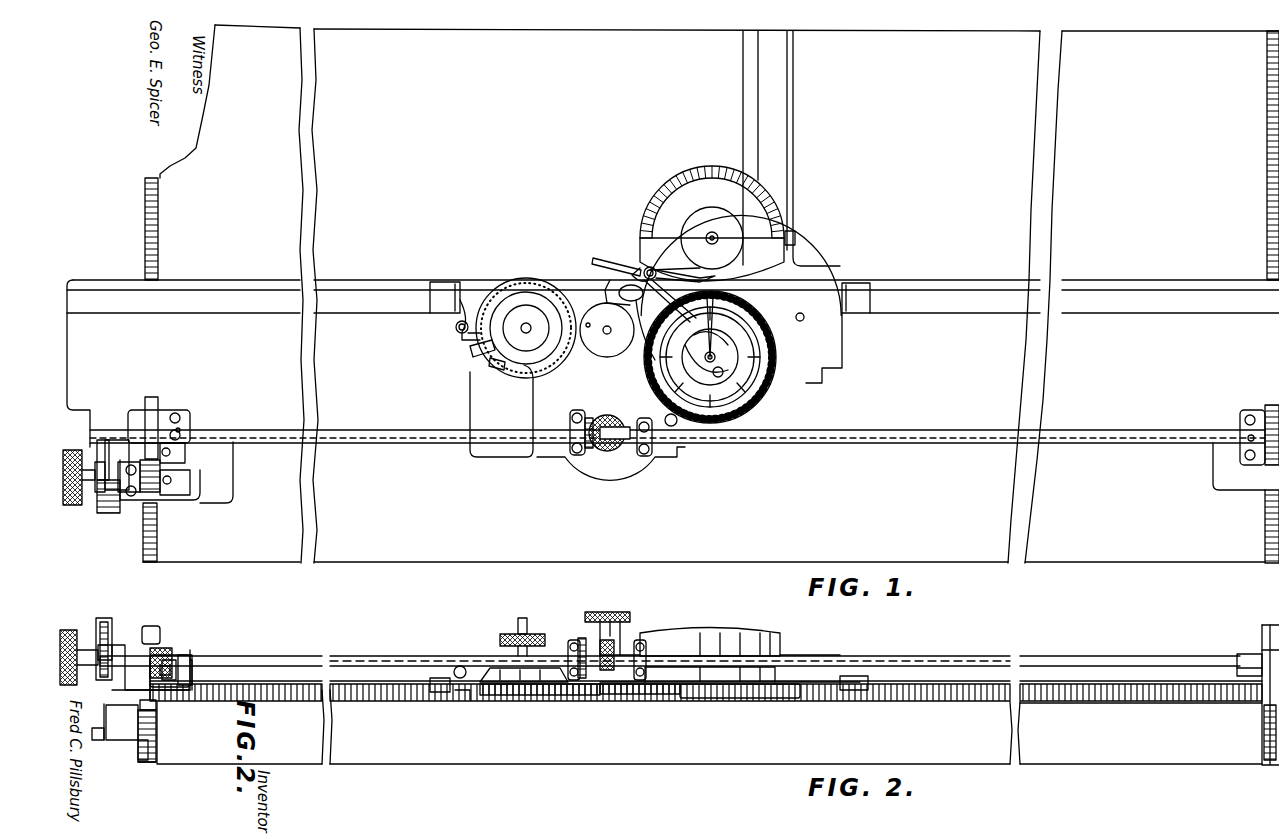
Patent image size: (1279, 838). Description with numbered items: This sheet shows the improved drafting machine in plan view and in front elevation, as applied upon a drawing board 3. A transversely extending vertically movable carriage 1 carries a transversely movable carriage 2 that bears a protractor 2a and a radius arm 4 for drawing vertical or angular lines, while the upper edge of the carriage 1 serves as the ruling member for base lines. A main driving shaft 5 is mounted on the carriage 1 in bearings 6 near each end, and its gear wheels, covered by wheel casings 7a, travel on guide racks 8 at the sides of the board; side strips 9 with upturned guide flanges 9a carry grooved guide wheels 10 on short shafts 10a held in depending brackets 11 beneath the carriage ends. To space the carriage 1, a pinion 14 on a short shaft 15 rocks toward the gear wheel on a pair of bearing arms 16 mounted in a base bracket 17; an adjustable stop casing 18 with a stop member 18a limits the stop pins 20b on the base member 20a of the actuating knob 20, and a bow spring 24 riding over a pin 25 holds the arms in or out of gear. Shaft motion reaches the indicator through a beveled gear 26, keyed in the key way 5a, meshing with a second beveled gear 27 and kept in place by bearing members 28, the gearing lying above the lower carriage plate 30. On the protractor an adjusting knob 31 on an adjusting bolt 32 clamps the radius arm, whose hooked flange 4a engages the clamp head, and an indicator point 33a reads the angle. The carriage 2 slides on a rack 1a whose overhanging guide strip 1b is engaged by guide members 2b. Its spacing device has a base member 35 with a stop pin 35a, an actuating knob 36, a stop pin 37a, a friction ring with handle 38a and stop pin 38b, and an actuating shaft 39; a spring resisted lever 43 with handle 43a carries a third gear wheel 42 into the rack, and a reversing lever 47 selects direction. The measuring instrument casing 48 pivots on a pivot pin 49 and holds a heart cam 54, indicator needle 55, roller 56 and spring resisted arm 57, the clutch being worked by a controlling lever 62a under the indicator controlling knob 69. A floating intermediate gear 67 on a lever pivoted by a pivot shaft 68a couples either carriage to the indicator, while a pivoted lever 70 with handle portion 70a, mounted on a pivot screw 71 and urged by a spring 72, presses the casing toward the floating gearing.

In FIG. 1, the vertically movable carriage 1 is at (965, 335).
In FIG. 2, the vertically movable carriage 1 is at (383, 702).
In FIG. 2, the rack 1a is at (290, 700).
In FIG. 1, the overhanging guide strip 1b is at (378, 300).
In FIG. 1, the transversely movable carriage 2 is at (833, 362).
In FIG. 2, the transversely movable carriage 2 is at (822, 680).
In FIG. 1, the protractor 2a is at (700, 194).
In FIG. 1, the guide members 2b is at (436, 292).
In FIG. 2, the guide members 2b is at (870, 685).
In FIG. 2, the drawing board 3 is at (1050, 754).
In FIG. 1, the radius arm 4 is at (795, 162).
In FIG. 1, the hooked flange 4a is at (748, 117).
In FIG. 1, the main actuating or driving shaft 5 is at (418, 433).
In FIG. 2, the main actuating or driving shaft 5 is at (400, 656).
In FIG. 2, the longitudinal groove or key way 5a is at (356, 656).
In FIG. 1, the bearings 6 is at (185, 432).
In FIG. 2, the bearings 6 is at (170, 670).
In FIG. 2, the wheel casings or housings 7a is at (145, 628).
In FIG. 1, the guide racks 8 is at (143, 546).
In FIG. 2, the guide racks 8 is at (150, 706).
In FIG. 2, the side strips 9 is at (158, 737).
In FIG. 2, the upturned guide flanges or ways 9a is at (142, 762).
In FIG. 2, the grooved guide wheels 10 is at (138, 748).
In FIG. 2, the short shafts 10a is at (100, 726).
In FIG. 2, the depending brackets 11 is at (112, 730).
In FIG. 1, the pinion 14 is at (160, 500).
In FIG. 2, the pinion 14 is at (160, 650).
In FIG. 1, the short movable actuating shaft 15 is at (175, 503).
In FIG. 2, the short movable actuating shaft 15 is at (180, 668).
In FIG. 1, the movable bearing arms 16 is at (122, 500).
In FIG. 2, the movable bearing arms 16 is at (134, 650).
In FIG. 1, the base bracket 17 is at (193, 496).
In FIG. 2, the base bracket 17 is at (195, 688).
In FIG. 1, the stop casing 18 is at (110, 455).
In FIG. 2, the stop casing 18 is at (115, 624).
In FIG. 1, the stop member 18a is at (115, 470).
In FIG. 2, the stop member 18a is at (102, 618).
In FIG. 1, the actuating knob or spacing head 20 is at (70, 505).
In FIG. 2, the actuating knob or spacing head 20 is at (66, 630).
In FIG. 1, the base member 20a is at (92, 460).
In FIG. 2, the base member 20a is at (96, 648).
In FIG. 1, the radially extending stop pins 20b is at (100, 512).
In FIG. 1, the bow spring 24 is at (172, 460).
In FIG. 2, the bow spring 24 is at (185, 670).
In FIG. 2, the pin 25 is at (170, 660).
In FIG. 1, the beveled gear 26 is at (590, 425).
In FIG. 2, the beveled gear 26 is at (578, 646).
In FIG. 1, the second beveled gear 27 is at (612, 420).
In FIG. 2, the second beveled gear 27 is at (610, 660).
In FIG. 1, the bearing members 28 is at (570, 448).
In FIG. 2, the bearing members 28 is at (580, 660).
In FIG. 2, the lower carriage plate 30 is at (712, 702).
In FIG. 1, the adjusting knob or head 31 is at (707, 218).
In FIG. 1, the adjusting bolt 32 is at (716, 236).
In FIG. 1, the indicator point 33a is at (797, 237).
In FIG. 1, the base member 35 is at (545, 295).
In FIG. 2, the base member 35 is at (487, 668).
In FIG. 1, the second stop pin 35a is at (505, 295).
In FIG. 1, the actuating knob 36 is at (520, 302).
In FIG. 2, the actuating knob 36 is at (506, 633).
In FIG. 1, the stop pin 37a is at (494, 305).
In FIG. 1, the actuating handle 38a is at (470, 352).
In FIG. 1, the stop pin 38b is at (492, 360).
In FIG. 1, the actuating shaft 39 is at (531, 325).
In FIG. 2, the actuating shaft 39 is at (525, 620).
In FIG. 2, the third gear wheel 42 is at (500, 702).
In FIG. 1, the spring resisted lever 43 is at (462, 343).
In FIG. 2, the spring resisted lever 43 is at (472, 702).
In FIG. 1, the handle 43a is at (455, 327).
In FIG. 2, the handle 43a is at (460, 665).
In FIG. 1, the pawl actuating and reversing lever 47 is at (527, 372).
In FIG. 1, the casing 48 is at (766, 315).
In FIG. 2, the casing 48 is at (780, 642).
In FIG. 1, the pivot pin 49 is at (631, 293).
In FIG. 1, the heart cam 54 is at (728, 345).
In FIG. 1, the indicator needle 55 is at (710, 327).
In FIG. 1, the roller 56 is at (706, 372).
In FIG. 1, the spring resisted arm 57 is at (718, 376).
In FIG. 1, the controlling lever 62a is at (607, 302).
In FIG. 2, the floating intermediate gear 67 is at (658, 700).
In FIG. 1, the bearing or pivot shaft 68a is at (612, 348).
In FIG. 2, the bearing or pivot shaft 68a is at (626, 612).
In FIG. 1, the indicator controlling knob 69 is at (606, 334).
In FIG. 2, the indicator controlling knob 69 is at (590, 618).
In FIG. 1, the pivoted lever 70 is at (668, 280).
In FIG. 1, the handle portion 70a is at (596, 258).
In FIG. 1, the pivot screw 71 is at (645, 264).
In FIG. 1, the spring 72 is at (640, 268).